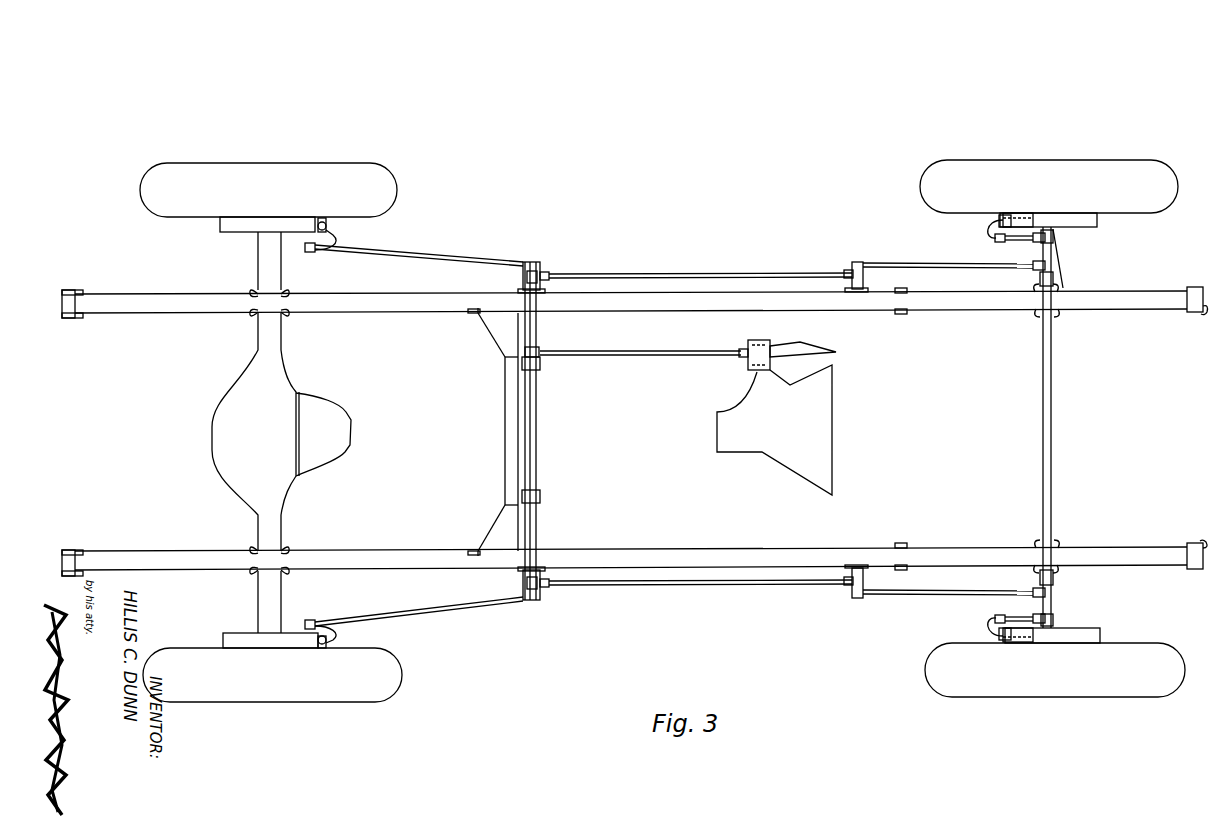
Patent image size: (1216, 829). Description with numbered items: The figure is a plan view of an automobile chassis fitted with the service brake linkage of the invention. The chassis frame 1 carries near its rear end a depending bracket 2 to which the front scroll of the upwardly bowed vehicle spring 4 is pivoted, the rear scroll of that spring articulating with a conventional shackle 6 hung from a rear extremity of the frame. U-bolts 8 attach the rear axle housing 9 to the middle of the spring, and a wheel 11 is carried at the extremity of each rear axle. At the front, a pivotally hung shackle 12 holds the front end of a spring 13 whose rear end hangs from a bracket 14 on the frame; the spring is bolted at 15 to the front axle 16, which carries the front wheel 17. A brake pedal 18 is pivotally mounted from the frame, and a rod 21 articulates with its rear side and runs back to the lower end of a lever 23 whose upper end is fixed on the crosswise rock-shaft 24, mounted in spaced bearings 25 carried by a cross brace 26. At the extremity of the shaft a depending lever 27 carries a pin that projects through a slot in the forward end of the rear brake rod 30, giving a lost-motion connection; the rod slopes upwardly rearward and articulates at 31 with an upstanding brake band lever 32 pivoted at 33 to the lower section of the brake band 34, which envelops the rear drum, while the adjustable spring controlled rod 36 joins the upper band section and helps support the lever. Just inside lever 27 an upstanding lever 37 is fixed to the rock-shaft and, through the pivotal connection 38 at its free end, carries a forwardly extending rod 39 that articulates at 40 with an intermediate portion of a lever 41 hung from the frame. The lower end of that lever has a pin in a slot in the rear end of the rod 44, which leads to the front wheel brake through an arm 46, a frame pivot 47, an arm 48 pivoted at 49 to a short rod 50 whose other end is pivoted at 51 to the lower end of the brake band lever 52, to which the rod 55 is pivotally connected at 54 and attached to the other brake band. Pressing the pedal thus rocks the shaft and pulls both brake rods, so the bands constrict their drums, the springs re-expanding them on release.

The chassis frame 1 is at (134, 300).
The depending bracket 2 is at (478, 292).
The vehicle spring 4 is at (62, 303).
The shackle 6 is at (71, 290).
The U-bolts 8 is at (250, 318).
The rear axle housing 9 is at (285, 330).
The wheel 11 is at (385, 170).
The shackle 12 is at (1195, 287).
The spring 13 is at (1204, 312).
The bracket 14 is at (901, 315).
The bolted connection 15 is at (1040, 316).
The front axle 16 is at (1053, 427).
The wheel 17 is at (1140, 160).
The brake pedal 18 is at (768, 341).
The rod 21 is at (668, 357).
The lever 23 is at (541, 352).
The rock-shaft 24 is at (537, 424).
The bearings 25 is at (542, 365).
The cross brace 26 is at (505, 421).
The depending lever 27 is at (541, 266).
The rear brake rod 30 is at (415, 254).
The articulation 31 is at (308, 252).
The brake band lever 32 is at (338, 238).
The pivot 33 is at (340, 634).
The brake band 34 is at (236, 226).
The adjustable spring controlled rod 36 is at (322, 218).
The upstanding lever 37 is at (525, 278).
The link clevis 38 is at (550, 277).
The rod 39 is at (700, 274).
The articulation 40 is at (866, 283).
The lever 41 is at (846, 270).
The rod 44 is at (935, 265).
The arm 46 is at (1052, 264).
The frame pivot 47 is at (1053, 278).
The arm 48 is at (1053, 238).
The pivot 49 is at (1042, 243).
The short rod 50 is at (1012, 242).
The pivot 51 is at (995, 239).
The brake band lever 52 is at (988, 224).
The pivot 54 is at (1007, 214).
The rod 55 is at (1004, 214).